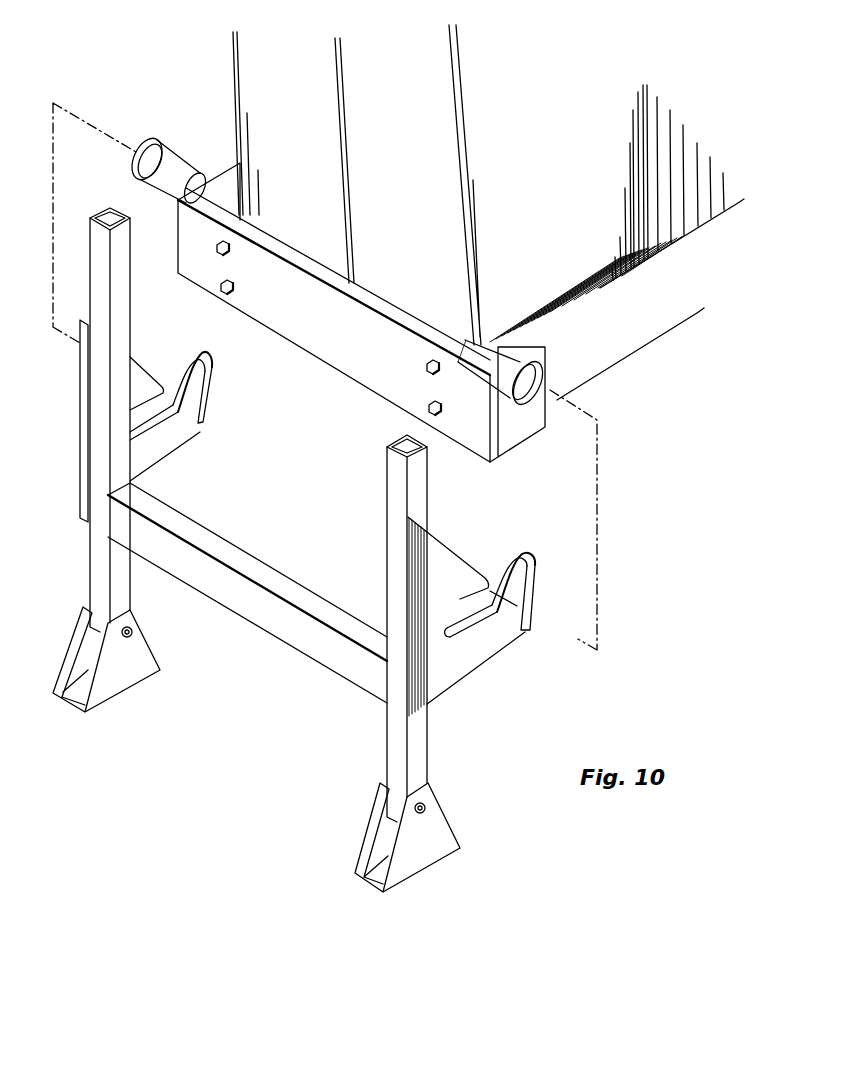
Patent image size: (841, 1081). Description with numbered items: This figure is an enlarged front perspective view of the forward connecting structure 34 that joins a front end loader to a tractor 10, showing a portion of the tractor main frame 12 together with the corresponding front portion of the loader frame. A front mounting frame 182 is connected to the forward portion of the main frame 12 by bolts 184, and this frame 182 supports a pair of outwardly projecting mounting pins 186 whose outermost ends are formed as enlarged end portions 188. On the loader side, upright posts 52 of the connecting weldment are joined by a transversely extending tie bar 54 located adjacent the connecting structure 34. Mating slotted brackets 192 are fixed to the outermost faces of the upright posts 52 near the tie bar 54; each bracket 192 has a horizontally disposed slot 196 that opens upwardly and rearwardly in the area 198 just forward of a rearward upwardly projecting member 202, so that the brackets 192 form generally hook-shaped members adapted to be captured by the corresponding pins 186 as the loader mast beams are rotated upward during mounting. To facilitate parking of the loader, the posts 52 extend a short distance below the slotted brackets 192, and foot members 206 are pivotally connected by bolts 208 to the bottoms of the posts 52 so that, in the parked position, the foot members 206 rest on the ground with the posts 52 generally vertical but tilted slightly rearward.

The tractor 10 is at (214, 64).
The main frame 12 is at (683, 322).
The forward connecting structure 34 is at (162, 208).
The upright posts 52 is at (92, 572).
The tie bar 54 is at (277, 575).
The front mounting frame 182 is at (298, 330).
The bolts 184 is at (232, 252).
The mounting pins 186 is at (178, 158).
The enlarged outermost end portions 188 is at (146, 138).
The slotted brackets 192 is at (524, 630).
The slots 196 is at (160, 412).
The slot opening area 198 is at (174, 363).
The rearward upwardly projecting members 202 is at (205, 373).
The foot members 206 is at (114, 697).
The bolts 208 is at (137, 638).